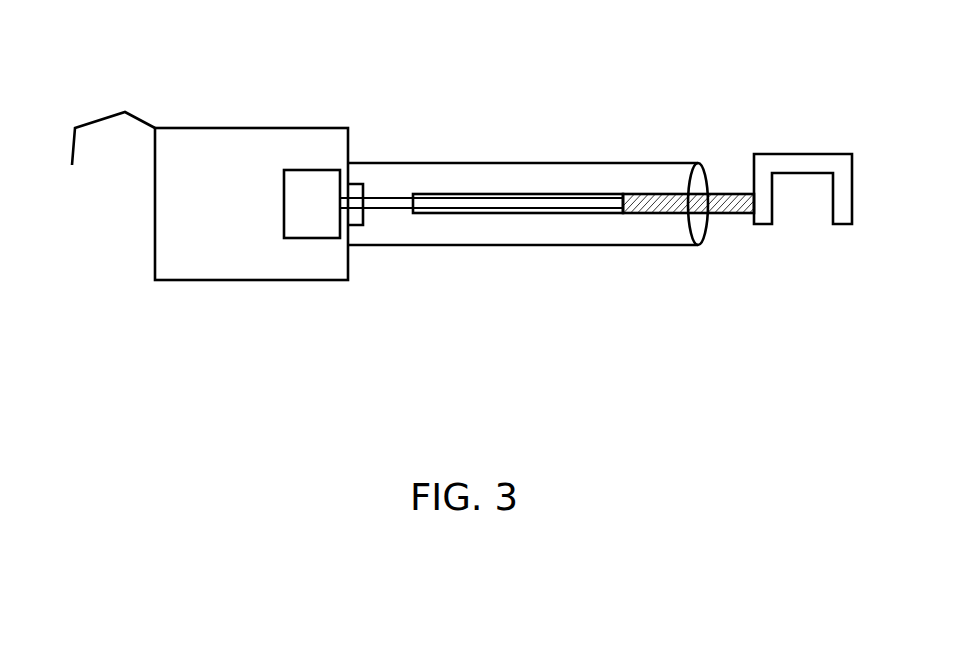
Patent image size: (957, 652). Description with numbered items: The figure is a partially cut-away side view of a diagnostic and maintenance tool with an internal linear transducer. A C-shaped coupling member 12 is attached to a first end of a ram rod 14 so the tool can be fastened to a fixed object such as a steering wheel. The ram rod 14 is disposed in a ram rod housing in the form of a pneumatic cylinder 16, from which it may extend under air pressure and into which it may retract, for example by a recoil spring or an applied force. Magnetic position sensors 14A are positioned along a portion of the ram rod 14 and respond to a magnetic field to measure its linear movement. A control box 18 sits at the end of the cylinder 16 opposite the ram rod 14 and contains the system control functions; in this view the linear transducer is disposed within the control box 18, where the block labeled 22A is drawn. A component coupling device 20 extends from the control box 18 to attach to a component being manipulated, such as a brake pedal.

The coupling member 12 is at (800, 154).
The ram rod 14 is at (735, 193).
The magnetic position sensors 14A is at (512, 192).
The pneumatic cylinder 16 is at (557, 247).
The control box 18 is at (255, 282).
The component coupling device 20 is at (94, 118).
The connector block 22A is at (310, 170).